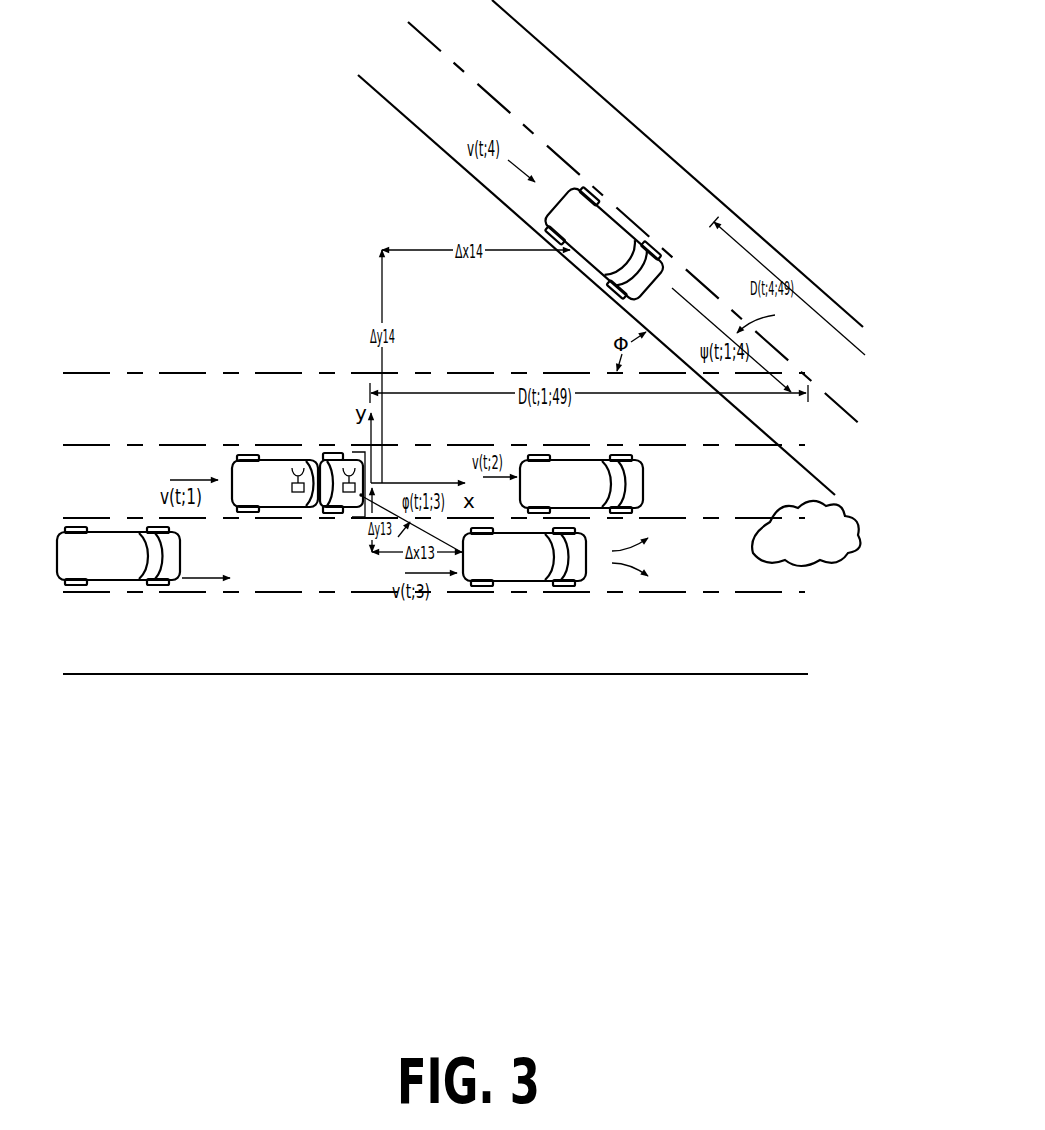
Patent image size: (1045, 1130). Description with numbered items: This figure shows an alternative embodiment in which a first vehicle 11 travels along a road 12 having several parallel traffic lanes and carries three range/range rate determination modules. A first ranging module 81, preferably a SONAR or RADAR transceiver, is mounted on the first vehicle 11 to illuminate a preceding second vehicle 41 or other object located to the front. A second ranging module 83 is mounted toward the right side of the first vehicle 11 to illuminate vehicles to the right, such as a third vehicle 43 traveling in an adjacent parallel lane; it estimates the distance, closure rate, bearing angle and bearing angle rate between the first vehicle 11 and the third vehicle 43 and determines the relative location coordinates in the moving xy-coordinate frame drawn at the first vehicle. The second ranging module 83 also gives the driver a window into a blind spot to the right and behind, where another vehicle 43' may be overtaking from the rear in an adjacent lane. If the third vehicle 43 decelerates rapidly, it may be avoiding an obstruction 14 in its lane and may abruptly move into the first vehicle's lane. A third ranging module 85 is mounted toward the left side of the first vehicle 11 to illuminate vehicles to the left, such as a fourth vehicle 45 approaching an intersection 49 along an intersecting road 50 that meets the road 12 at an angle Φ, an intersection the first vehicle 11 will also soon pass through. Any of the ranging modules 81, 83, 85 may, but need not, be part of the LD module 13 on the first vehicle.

The first vehicle 11 is at (253, 483).
The road 12 is at (156, 415).
The LD module 13 is at (297, 493).
The obstruction 14 is at (765, 549).
The second vehicle 41 is at (545, 485).
The third vehicle 43 is at (524, 557).
The vehicle V3' 43' is at (118, 556).
The fourth vehicle 45 is at (585, 221).
The intersection 49 is at (835, 437).
The intersecting road 50 is at (666, 313).
The first ranging module 81 is at (354, 488).
The second ranging module 83 is at (362, 498).
The third ranging module 85 is at (357, 452).